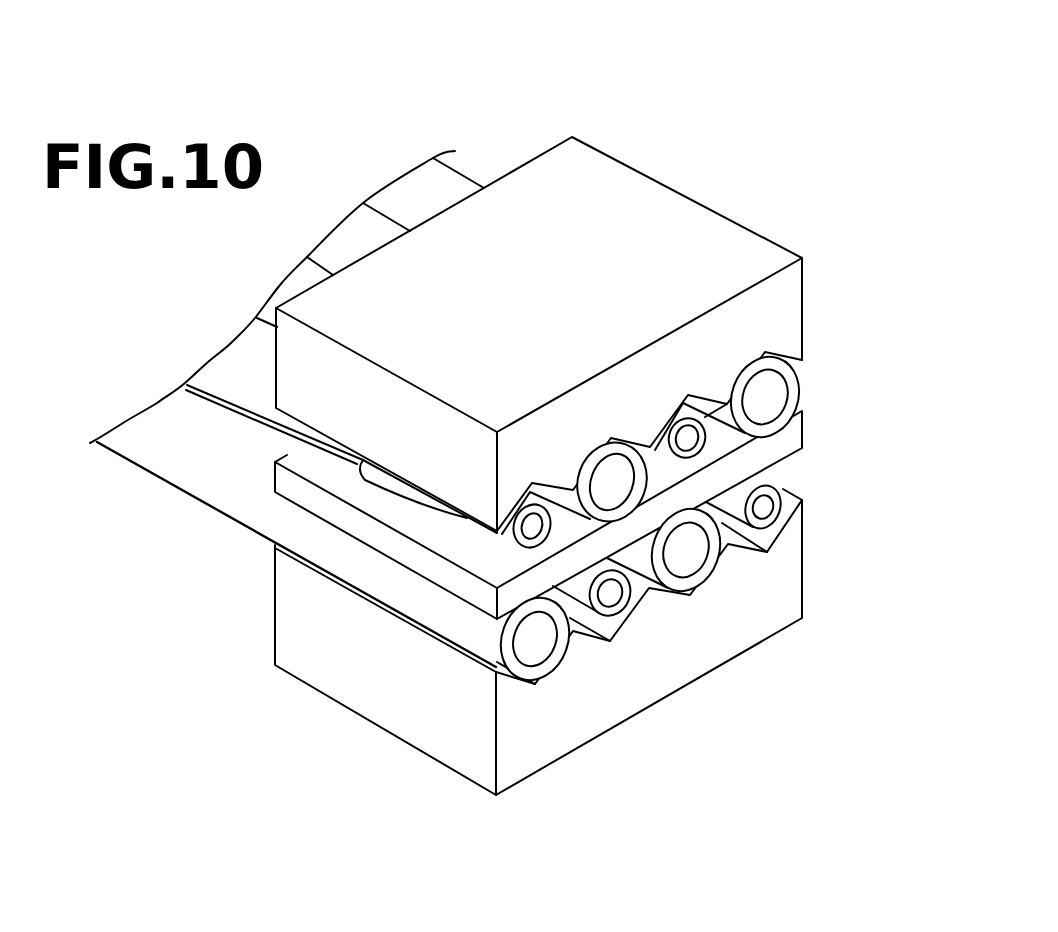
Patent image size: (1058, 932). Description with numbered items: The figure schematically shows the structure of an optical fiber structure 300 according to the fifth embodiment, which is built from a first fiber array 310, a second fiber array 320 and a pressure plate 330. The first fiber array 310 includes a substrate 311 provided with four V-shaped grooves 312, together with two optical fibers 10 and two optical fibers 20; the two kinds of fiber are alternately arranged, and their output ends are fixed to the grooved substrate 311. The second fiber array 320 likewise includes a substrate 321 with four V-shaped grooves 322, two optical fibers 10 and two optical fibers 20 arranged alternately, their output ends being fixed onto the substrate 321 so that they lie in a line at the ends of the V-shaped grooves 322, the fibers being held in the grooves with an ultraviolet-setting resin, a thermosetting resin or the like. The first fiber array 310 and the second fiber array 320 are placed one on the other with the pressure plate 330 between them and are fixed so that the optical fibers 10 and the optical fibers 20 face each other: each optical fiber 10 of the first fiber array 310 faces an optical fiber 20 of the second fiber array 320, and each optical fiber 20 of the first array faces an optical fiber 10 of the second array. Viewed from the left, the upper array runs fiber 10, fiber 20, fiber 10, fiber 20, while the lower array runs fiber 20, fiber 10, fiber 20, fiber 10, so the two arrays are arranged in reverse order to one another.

The optical fiber structure 300 is at (508, 430).
The first fiber array 310 is at (601, 315).
The substrate having V-shaped grooves 311 is at (630, 185).
The V-shaped grooves 312 is at (532, 483).
The second fiber array 320 is at (600, 666).
The substrate having V-shaped grooves 321 is at (417, 752).
The V-shaped grooves 322 is at (536, 688).
The pressure plate 330 is at (803, 430).
The optical fiber 10 is at (548, 492).
The optical fiber 20 is at (630, 443).